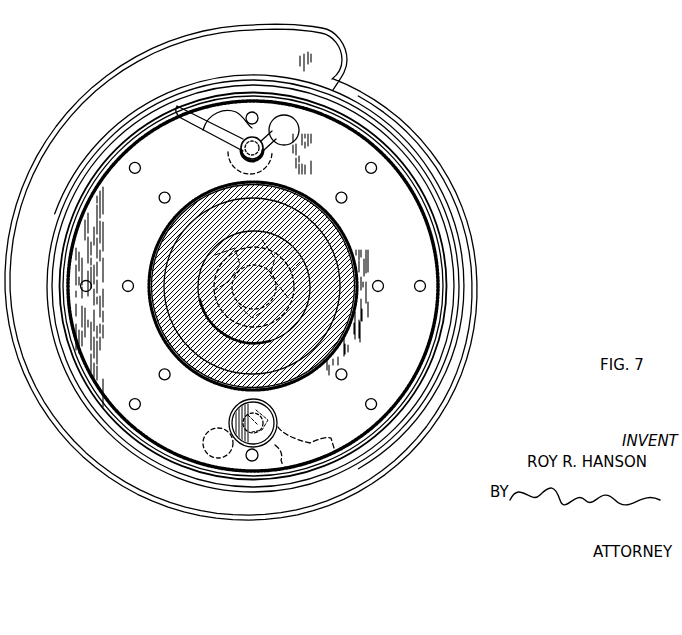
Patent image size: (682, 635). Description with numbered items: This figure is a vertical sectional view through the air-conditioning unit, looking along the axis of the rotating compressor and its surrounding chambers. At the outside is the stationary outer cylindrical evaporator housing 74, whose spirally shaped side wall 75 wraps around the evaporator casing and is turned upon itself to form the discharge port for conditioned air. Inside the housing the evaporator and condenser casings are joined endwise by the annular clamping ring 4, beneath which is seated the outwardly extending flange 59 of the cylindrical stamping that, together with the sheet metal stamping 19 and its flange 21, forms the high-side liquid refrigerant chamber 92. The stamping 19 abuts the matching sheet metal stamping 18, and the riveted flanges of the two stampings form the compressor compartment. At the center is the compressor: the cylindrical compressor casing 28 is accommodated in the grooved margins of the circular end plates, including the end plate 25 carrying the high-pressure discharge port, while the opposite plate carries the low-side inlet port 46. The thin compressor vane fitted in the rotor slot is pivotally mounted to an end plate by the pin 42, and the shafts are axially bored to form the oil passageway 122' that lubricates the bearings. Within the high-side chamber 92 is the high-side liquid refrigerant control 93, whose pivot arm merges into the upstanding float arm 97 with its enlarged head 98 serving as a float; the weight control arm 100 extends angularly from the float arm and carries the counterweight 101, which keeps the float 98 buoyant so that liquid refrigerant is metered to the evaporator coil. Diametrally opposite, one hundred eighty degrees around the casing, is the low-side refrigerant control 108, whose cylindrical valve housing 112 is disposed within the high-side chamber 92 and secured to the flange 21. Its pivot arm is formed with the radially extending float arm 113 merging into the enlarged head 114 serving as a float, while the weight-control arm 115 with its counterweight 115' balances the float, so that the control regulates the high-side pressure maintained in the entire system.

The outer cylindrical evaporator housing 74 is at (152, 42).
The spirally shaped side wall 75 is at (470, 333).
The annular clamping ring 4 is at (402, 148).
The sheet metal stamping 19 is at (413, 210).
The outwardly extending flange 59 is at (433, 233).
The high-side liquid refrigerant chamber 92 is at (430, 255).
The high-side liquid refrigerant control 93 is at (307, 120).
The counterweight 101 is at (292, 133).
The weight control arm 100 is at (300, 152).
The float arm 97 is at (238, 142).
The enlarged head 98 is at (187, 122).
The low-side inlet port 46 is at (213, 197).
The pin 42 is at (257, 197).
The outwardly extending flange 21 is at (255, 277).
The oil passageway 122' is at (212, 262).
The cylindrical compressor casing 28 is at (333, 235).
The circular end plate 25 is at (348, 250).
The sheet metal stamping 18 is at (157, 330).
The weight-control arm 115 is at (222, 415).
The counterweight 115' is at (198, 441).
The cylindrical valve housing 112 is at (272, 417).
The float arm 113 is at (288, 437).
The enlarged head 114 is at (330, 440).
The low-side refrigerant control 108 is at (327, 430).